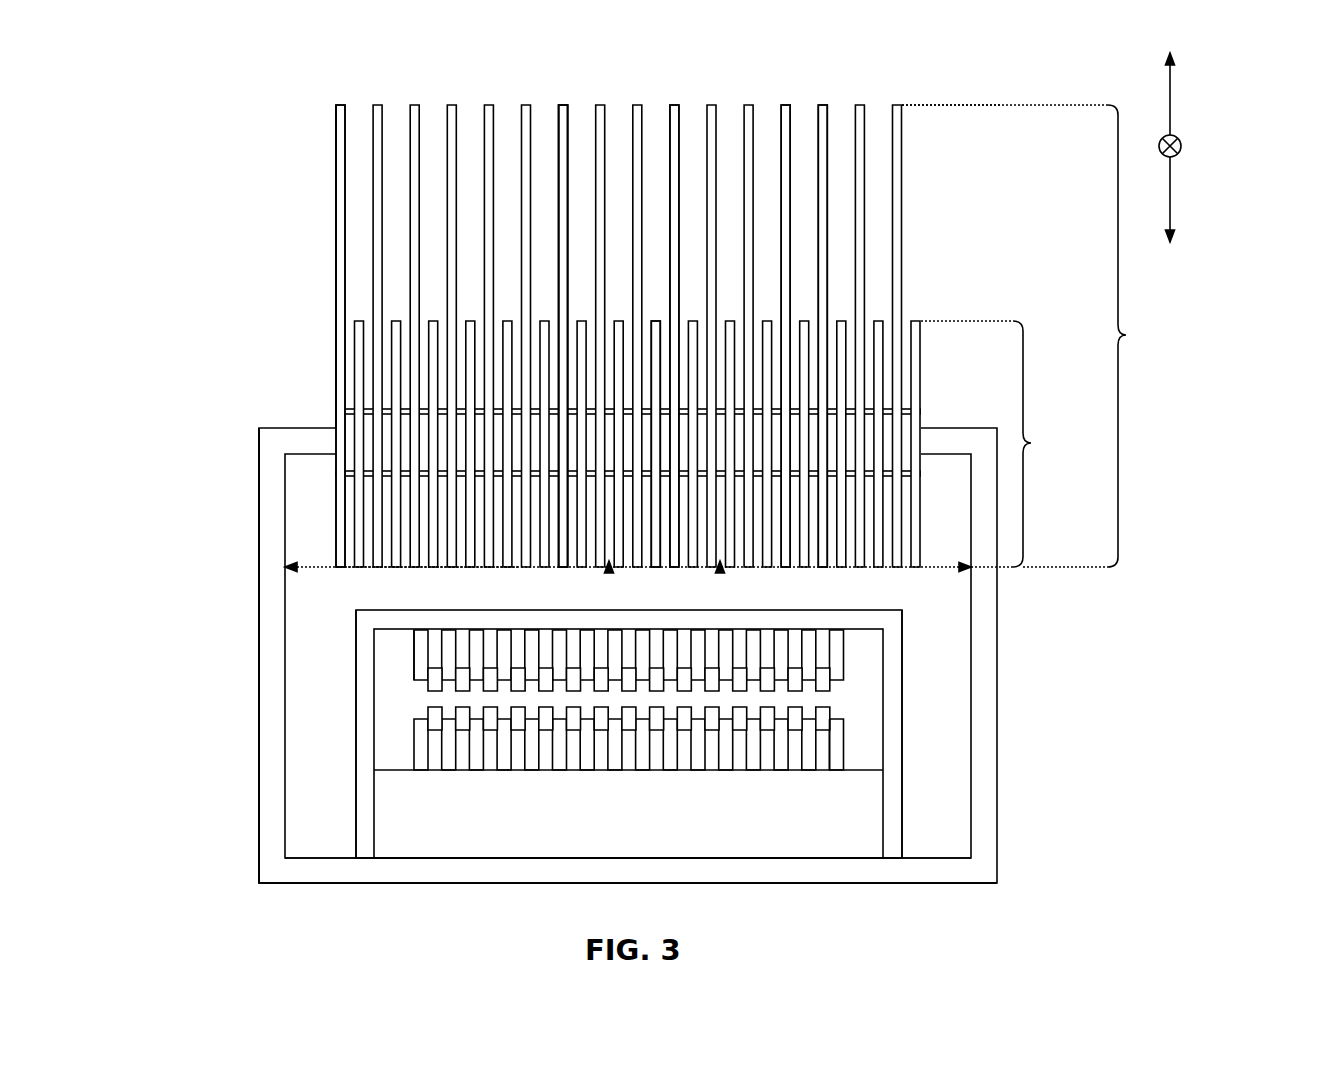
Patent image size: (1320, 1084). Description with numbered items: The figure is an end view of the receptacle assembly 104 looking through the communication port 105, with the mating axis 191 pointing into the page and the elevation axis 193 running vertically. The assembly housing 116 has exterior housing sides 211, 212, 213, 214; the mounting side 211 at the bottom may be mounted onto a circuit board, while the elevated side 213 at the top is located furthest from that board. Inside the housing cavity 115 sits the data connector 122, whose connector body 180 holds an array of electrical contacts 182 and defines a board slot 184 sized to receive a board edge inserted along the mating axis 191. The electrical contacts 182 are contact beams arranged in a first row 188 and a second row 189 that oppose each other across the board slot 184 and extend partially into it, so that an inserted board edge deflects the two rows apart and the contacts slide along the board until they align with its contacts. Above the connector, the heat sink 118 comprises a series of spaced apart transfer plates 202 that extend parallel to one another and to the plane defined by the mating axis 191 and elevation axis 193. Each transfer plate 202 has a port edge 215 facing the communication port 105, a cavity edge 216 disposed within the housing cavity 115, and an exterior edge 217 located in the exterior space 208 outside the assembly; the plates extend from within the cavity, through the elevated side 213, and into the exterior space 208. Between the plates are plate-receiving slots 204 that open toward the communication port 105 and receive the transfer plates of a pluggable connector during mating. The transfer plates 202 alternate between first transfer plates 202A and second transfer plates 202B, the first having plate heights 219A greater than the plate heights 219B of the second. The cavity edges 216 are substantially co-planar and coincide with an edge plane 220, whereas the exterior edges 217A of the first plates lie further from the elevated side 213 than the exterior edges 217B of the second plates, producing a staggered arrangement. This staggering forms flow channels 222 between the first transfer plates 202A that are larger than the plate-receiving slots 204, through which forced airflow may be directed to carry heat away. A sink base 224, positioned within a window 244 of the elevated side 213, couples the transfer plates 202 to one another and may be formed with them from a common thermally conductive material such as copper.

The receptacle assembly 104 is at (232, 118).
The communication port 105 is at (313, 838).
The housing cavity 115 is at (343, 630).
The assembly housing 116 is at (256, 490).
The heat sink 118 is at (936, 165).
The data connector 122 is at (935, 822).
The connector body 180 is at (902, 735).
The electrical contacts 182 is at (739, 668).
The board slot 184 is at (838, 700).
The first row 188 is at (413, 680).
The second row 189 is at (413, 719).
The mating axis 191 is at (1183, 146).
The elevation axis 193 is at (1173, 93).
The transfer plates 202 is at (949, 313).
The first transfer plates 202A is at (558, 145).
The second transfer plates 202B is at (675, 327).
The plate-receiving slots 204 is at (608, 570).
The exterior space 208 is at (213, 308).
The mounting side 211 is at (908, 892).
The housing side 212 is at (258, 643).
The elevated side 213 is at (307, 427).
The housing side 214 is at (1006, 617).
The port edge 215 is at (334, 518).
The cavity edge 216 is at (460, 567).
The exterior edge 217 is at (414, 106).
The exterior edges of the first transfer plates 217A is at (563, 106).
The exterior edges of the second transfer plates 217B is at (656, 321).
The plate heights of the first transfer plates 219A is at (1055, 336).
The plate heights of the second transfer plates 219B is at (1009, 444).
The edge plane 220 is at (312, 565).
The flow channels 222 is at (805, 176).
The sink base 224 is at (907, 437).
The window 244 is at (334, 427).